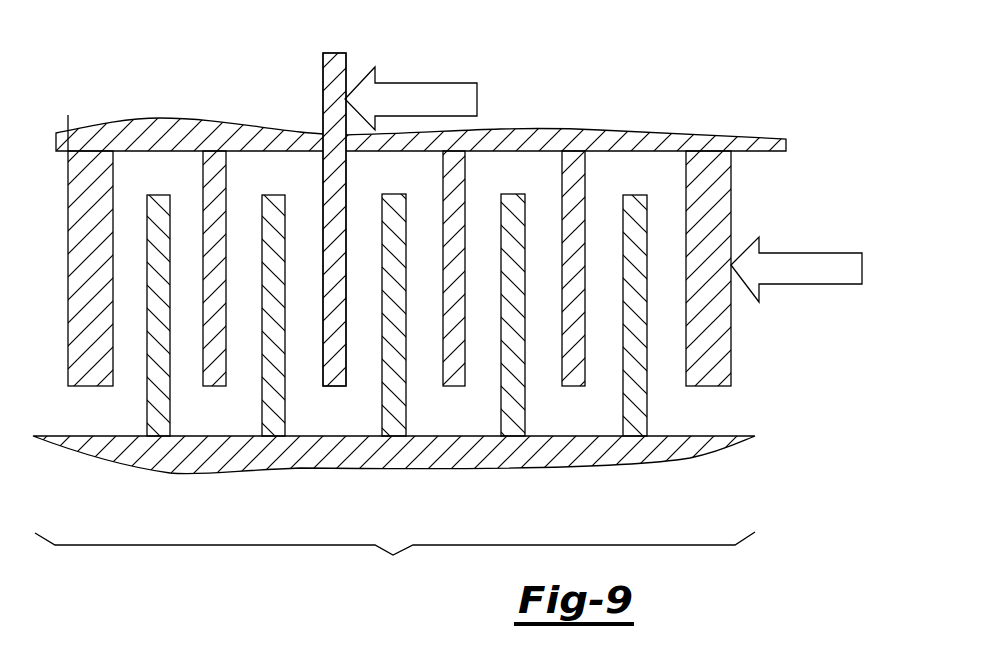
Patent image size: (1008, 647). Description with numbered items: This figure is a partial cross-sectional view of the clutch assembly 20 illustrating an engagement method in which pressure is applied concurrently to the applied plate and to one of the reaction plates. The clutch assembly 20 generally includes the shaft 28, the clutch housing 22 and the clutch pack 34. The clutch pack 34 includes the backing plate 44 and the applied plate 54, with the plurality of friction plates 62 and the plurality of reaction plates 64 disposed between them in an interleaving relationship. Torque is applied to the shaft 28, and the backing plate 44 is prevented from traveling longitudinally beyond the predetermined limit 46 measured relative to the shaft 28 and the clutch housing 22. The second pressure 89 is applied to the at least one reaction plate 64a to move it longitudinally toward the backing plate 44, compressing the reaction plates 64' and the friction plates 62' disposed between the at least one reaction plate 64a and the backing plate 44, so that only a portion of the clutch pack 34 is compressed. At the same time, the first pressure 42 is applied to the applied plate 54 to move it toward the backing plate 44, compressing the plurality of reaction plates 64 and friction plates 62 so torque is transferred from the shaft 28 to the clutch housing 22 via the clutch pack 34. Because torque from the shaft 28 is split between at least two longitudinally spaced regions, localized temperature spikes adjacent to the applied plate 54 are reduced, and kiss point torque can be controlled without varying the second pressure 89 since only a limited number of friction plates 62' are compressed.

The clutch assembly 20 is at (122, 52).
The clutch housing 22 is at (207, 140).
The shaft 28 is at (737, 440).
The clutch pack 34 is at (395, 561).
The first pressure 42 is at (812, 253).
The backing plate 44 is at (86, 355).
The predetermined limit 46 is at (66, 128).
The applied plate 54 is at (716, 355).
The friction plates 62 is at (523, 361).
The friction plates disposed between the at least one reaction plate and the backing 62' is at (223, 361).
The reaction plates 64 is at (521, 339).
The reaction plates disposed between the at least one reaction plate and the backing 64' is at (224, 339).
The at least one reaction plate 64a is at (333, 388).
The second pressure 89 is at (426, 82).